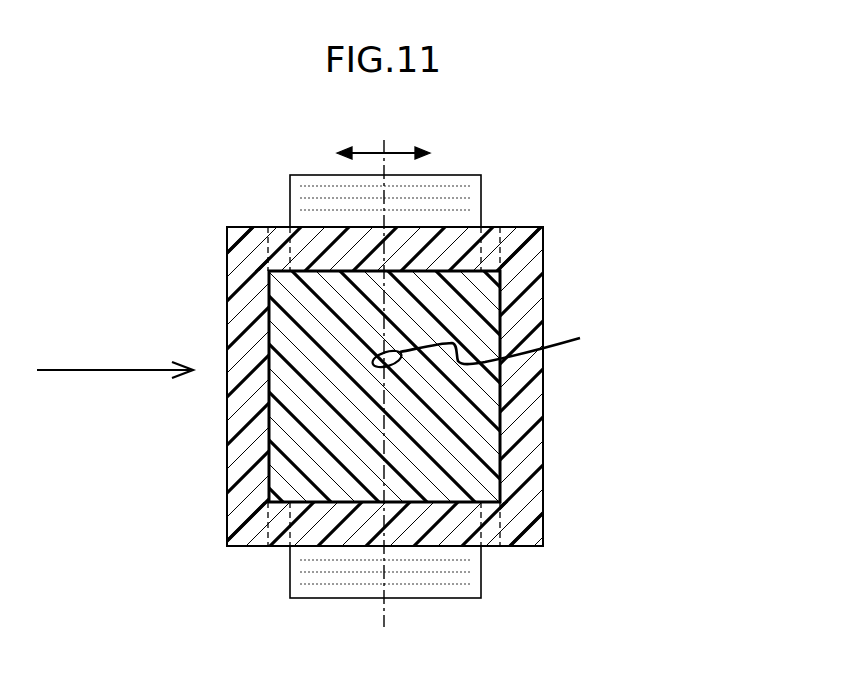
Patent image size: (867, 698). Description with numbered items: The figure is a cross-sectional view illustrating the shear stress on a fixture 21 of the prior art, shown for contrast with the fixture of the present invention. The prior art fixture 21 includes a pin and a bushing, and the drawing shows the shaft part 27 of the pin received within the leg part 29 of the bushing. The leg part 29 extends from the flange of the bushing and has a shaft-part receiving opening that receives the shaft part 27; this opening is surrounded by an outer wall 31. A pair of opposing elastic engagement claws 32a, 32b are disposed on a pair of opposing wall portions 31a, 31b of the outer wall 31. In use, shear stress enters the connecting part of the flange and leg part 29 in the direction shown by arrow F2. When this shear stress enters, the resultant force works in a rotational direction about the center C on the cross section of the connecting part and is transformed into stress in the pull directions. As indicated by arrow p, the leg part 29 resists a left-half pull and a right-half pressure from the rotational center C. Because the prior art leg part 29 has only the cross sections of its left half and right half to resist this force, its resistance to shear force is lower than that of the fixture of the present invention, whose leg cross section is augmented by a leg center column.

The fixture 21 is at (646, 161).
The shaft part 27 is at (440, 437).
The leg part 29 is at (527, 226).
The outer wall 31 is at (522, 285).
The wall portion 31a is at (313, 248).
The wall portion 31b is at (338, 550).
The elastic engagement claw 32a is at (320, 185).
The elastic engagement claw 32b is at (440, 580).
The center C is at (488, 348).
The arrow p is at (370, 150).
The arrow F2 is at (84, 369).